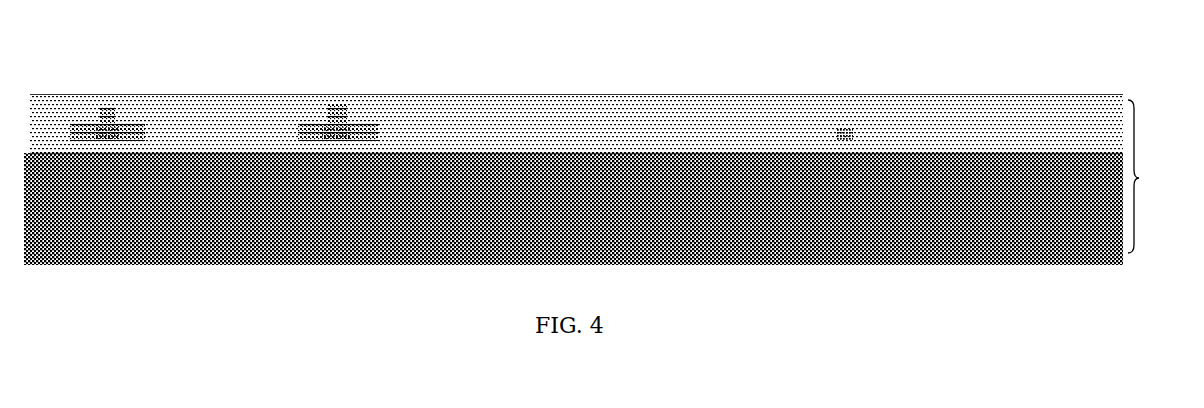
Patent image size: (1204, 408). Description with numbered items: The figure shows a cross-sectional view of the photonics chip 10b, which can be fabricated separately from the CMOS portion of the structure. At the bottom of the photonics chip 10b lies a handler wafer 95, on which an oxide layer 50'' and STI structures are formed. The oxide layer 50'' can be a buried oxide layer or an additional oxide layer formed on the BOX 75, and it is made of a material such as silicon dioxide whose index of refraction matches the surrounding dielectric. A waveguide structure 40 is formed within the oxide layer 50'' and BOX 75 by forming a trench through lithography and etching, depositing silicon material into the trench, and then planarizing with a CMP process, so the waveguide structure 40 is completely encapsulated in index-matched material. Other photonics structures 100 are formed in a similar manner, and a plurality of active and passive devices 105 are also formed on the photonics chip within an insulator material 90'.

The active and passive devices 105 is at (136, 109).
The photonics structures 100 is at (328, 104).
The oxide layer 50'' is at (576, 95).
The insulator material 90' is at (576, 95).
The waveguide structure 40 is at (838, 133).
The BOX 75 is at (990, 128).
The handler wafer 95 is at (798, 240).
The photonics chip 10b is at (1157, 176).